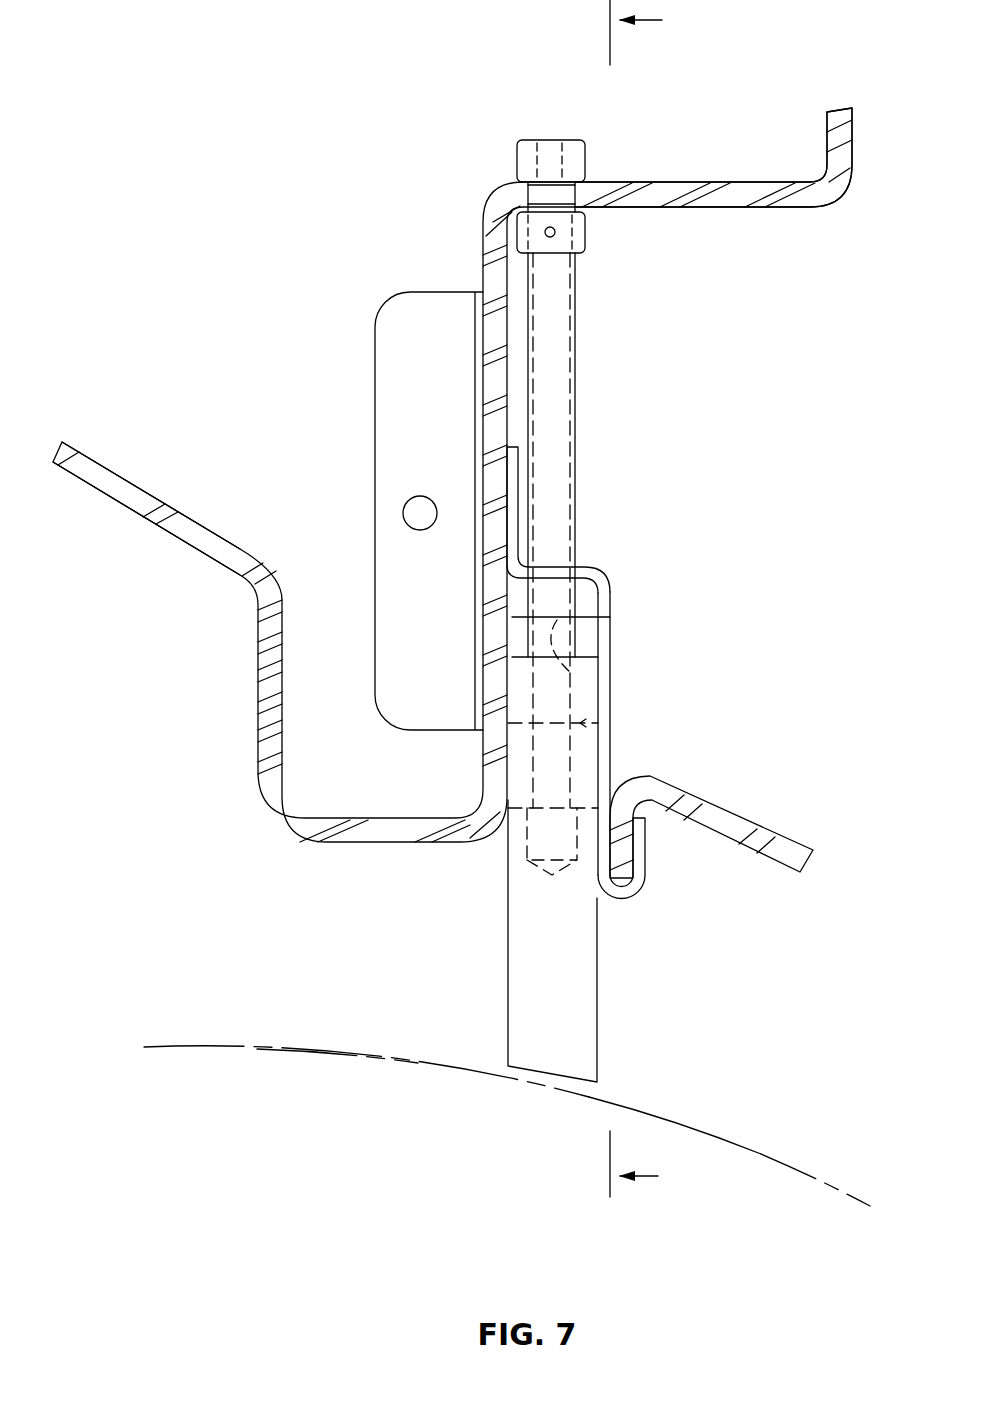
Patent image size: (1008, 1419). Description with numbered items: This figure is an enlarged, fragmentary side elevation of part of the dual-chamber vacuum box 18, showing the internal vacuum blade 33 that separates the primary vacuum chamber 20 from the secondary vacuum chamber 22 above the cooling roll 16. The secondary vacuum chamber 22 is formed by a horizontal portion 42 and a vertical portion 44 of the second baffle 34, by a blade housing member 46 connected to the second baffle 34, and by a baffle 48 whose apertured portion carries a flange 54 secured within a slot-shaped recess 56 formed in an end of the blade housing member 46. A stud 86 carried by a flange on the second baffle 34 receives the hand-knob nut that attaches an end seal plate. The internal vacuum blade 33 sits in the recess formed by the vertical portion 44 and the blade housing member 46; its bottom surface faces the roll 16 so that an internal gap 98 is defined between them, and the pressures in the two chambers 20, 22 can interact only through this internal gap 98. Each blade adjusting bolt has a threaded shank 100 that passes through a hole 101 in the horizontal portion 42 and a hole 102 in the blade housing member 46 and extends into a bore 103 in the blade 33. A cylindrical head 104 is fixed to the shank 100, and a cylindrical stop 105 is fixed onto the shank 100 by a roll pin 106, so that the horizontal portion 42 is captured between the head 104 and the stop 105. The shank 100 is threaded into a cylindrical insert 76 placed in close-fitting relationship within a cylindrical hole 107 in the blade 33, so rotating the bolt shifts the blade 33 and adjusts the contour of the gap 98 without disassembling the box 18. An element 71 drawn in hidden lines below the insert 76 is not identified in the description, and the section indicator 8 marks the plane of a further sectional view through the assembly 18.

The section line 8- 8 is at (639, 607).
The roll 16 is at (327, 1139).
The dual-chamber vacuum box 18 is at (322, 240).
The primary vacuum chamber 20 is at (241, 1011).
The secondary vacuum chamber 22 is at (783, 1083).
The internal vacuum blade 33 is at (583, 989).
The second baffle 34 is at (175, 522).
The horizontal portion 42 is at (728, 197).
The vertical portion 44 is at (492, 745).
The blade housing member 46 is at (603, 698).
The baffle 48 is at (768, 858).
The flange 54 is at (623, 852).
The slot-shaped recess 56 is at (635, 882).
The lower nut 71 is at (548, 838).
The cylindrical insert 76 is at (520, 768).
The stud 86 is at (410, 516).
The internal gap 98 is at (589, 1089).
The threaded shank 100 is at (555, 378).
The hole 101 is at (520, 203).
The hole 102 is at (588, 562).
The bore 103 is at (613, 617).
The cylindrical head 104 is at (548, 160).
The cylindrical stop 105 is at (583, 232).
The roll pin 106 is at (552, 237).
The cylindrical hole 107 is at (610, 737).